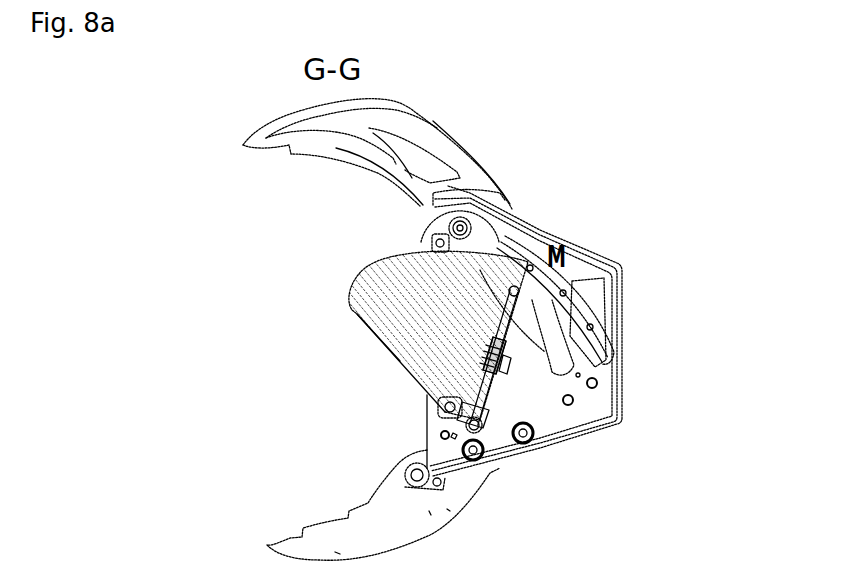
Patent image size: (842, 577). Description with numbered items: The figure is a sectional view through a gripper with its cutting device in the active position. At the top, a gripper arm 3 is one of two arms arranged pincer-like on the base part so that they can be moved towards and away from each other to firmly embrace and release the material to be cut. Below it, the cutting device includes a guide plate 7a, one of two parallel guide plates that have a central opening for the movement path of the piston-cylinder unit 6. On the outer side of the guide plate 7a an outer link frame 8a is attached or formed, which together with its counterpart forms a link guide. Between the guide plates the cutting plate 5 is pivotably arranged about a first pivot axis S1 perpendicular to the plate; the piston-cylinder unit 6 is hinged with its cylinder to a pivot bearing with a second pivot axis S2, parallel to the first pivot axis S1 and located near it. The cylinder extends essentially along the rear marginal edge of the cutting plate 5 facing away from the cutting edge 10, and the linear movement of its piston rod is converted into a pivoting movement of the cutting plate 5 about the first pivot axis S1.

The gripper arm 3 is at (467, 166).
The cutting plate 5 is at (390, 283).
The cutting edge 10 is at (362, 336).
The outer link frame 8a is at (562, 343).
The guide plate 7a is at (595, 408).
The piston-cylinder unit 6 is at (505, 381).
The first pivot axis S1 is at (445, 412).
The second pivot axis S2 is at (473, 427).